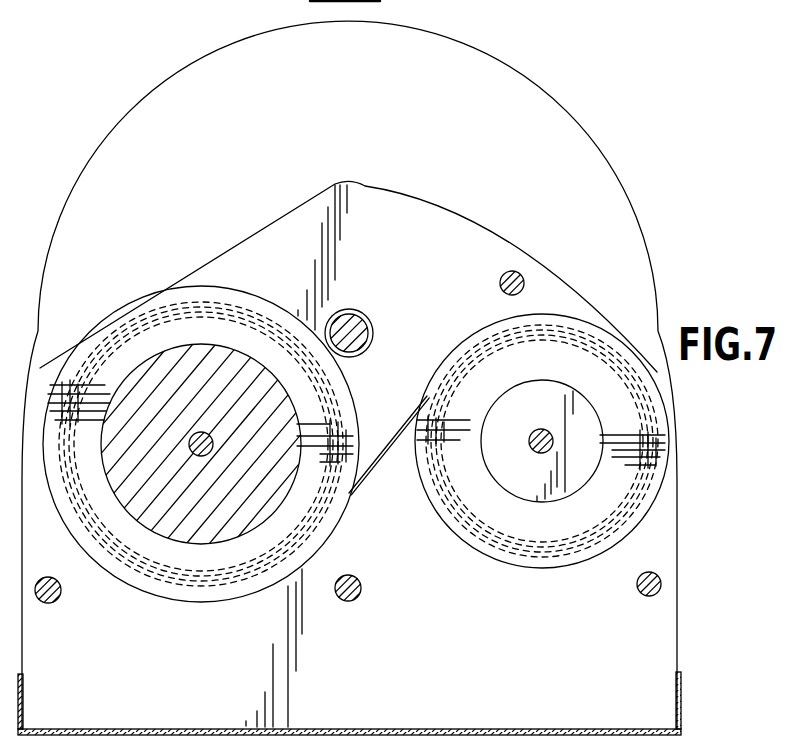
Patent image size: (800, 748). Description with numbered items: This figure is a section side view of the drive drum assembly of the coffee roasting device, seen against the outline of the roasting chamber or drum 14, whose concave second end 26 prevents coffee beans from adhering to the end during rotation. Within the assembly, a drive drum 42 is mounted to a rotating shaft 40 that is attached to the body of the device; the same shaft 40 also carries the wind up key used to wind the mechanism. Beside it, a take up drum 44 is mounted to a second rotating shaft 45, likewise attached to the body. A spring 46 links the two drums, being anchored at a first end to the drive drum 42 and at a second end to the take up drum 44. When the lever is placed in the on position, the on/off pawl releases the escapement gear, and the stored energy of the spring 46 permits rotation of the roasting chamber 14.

The roasting chamber or drum 14 is at (556, 99).
The second end 26 is at (614, 202).
The rotating shaft 40 is at (195, 433).
The drive drum 42 is at (192, 284).
The take up drum 44 is at (468, 333).
The rotating shaft 45 is at (543, 428).
The spring 46 is at (408, 426).